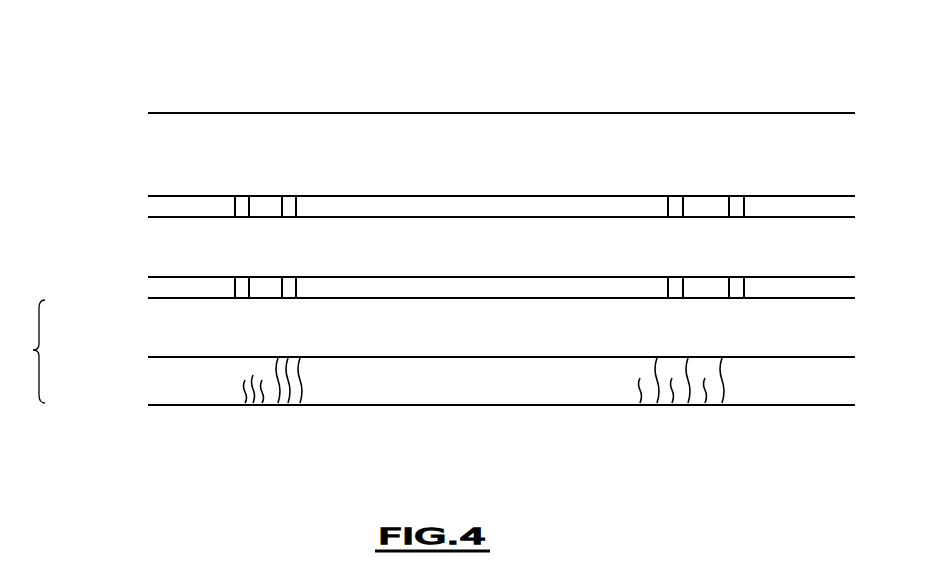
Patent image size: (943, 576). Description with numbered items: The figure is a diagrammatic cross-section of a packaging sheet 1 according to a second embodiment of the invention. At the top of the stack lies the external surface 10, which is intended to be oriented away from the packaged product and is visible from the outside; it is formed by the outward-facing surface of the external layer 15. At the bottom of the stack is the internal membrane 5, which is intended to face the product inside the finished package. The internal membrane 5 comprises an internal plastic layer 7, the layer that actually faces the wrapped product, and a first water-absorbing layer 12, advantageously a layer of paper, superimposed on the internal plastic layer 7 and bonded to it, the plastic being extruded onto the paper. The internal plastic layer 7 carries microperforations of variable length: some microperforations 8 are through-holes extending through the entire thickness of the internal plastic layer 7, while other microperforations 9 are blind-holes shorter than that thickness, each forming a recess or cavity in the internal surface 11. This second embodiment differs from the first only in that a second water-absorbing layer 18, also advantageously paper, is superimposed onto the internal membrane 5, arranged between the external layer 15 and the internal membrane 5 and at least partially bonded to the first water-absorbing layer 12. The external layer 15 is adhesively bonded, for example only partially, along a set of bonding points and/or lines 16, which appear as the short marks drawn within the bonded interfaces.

The packaging sheet 1 is at (757, 96).
The external surface 10 is at (216, 112).
The external layer 15 is at (165, 166).
The bonding points and/or lines 16 is at (235, 207).
The second water-absorbing layer 18 is at (165, 251).
The first water-absorbing layer 12 is at (165, 328).
The internal membrane 5 is at (30, 351).
The internal plastic layer 7 is at (165, 383).
The internal surface 11 is at (200, 407).
The microperforations 9 is at (270, 409).
The microperforations 8 is at (307, 409).